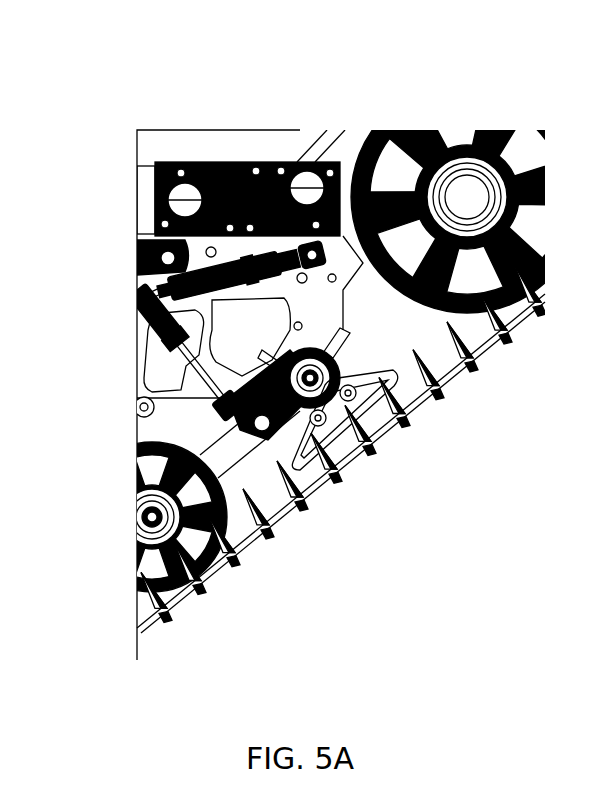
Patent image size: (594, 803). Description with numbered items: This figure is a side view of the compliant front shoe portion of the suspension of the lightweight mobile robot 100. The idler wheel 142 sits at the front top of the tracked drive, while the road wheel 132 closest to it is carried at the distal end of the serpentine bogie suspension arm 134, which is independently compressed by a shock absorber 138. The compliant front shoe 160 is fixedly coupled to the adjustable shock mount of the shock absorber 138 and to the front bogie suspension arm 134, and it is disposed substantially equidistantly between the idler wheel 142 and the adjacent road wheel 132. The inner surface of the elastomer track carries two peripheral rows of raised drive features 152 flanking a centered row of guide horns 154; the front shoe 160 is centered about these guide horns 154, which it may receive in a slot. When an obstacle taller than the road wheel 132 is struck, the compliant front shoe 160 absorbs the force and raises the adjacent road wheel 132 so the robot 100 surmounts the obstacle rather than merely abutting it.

The lightweight mobile robot 100 is at (262, 88).
The idler wheel 142 is at (477, 134).
The shock absorber 138 is at (142, 328).
The compliant front shoe 160 is at (340, 372).
The bogie suspension arm 134 is at (215, 457).
The guide horns 154 is at (315, 478).
The raised drive features 152 is at (290, 495).
The road wheel 132 is at (213, 562).